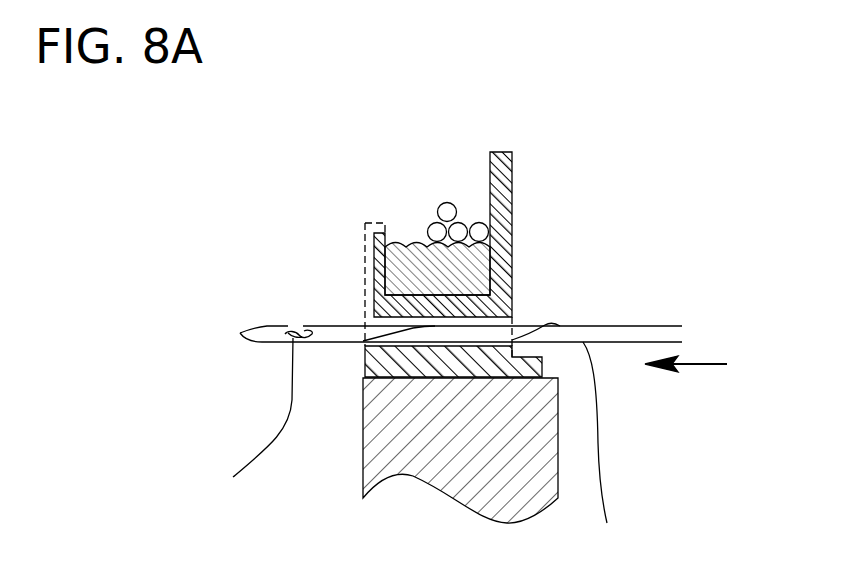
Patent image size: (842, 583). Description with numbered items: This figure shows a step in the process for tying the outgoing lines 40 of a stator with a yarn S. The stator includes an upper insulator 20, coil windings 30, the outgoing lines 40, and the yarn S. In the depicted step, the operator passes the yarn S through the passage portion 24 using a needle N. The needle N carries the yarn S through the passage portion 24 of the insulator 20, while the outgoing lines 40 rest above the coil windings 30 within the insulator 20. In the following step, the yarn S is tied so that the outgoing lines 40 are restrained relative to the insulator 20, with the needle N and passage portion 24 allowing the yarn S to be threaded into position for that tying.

The upper insulator 20 is at (363, 357).
The passage portion 24 is at (518, 322).
The coil windings 30 is at (390, 272).
The outgoing lines 40 is at (447, 212).
The needle N is at (600, 335).
The yarn S is at (598, 448).